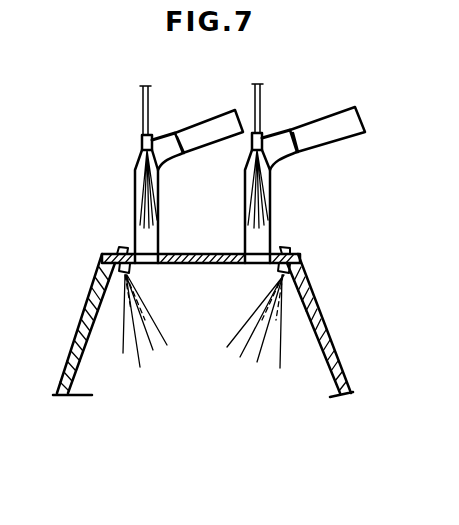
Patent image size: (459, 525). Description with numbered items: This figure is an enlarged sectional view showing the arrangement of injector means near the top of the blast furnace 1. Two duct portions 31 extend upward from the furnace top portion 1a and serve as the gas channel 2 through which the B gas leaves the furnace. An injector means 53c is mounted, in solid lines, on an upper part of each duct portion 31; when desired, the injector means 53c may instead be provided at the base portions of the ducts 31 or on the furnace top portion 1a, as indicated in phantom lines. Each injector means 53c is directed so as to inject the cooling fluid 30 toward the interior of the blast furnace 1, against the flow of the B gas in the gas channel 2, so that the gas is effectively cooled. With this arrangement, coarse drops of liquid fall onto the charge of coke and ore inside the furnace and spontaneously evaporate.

The blast furnace 1 is at (327, 312).
The furnace top portion 1a is at (243, 253).
The gas channel 2 is at (212, 148).
The cooling fluid 30 is at (135, 187).
The duct portion 31 is at (160, 233).
The injector means 53c is at (142, 137).